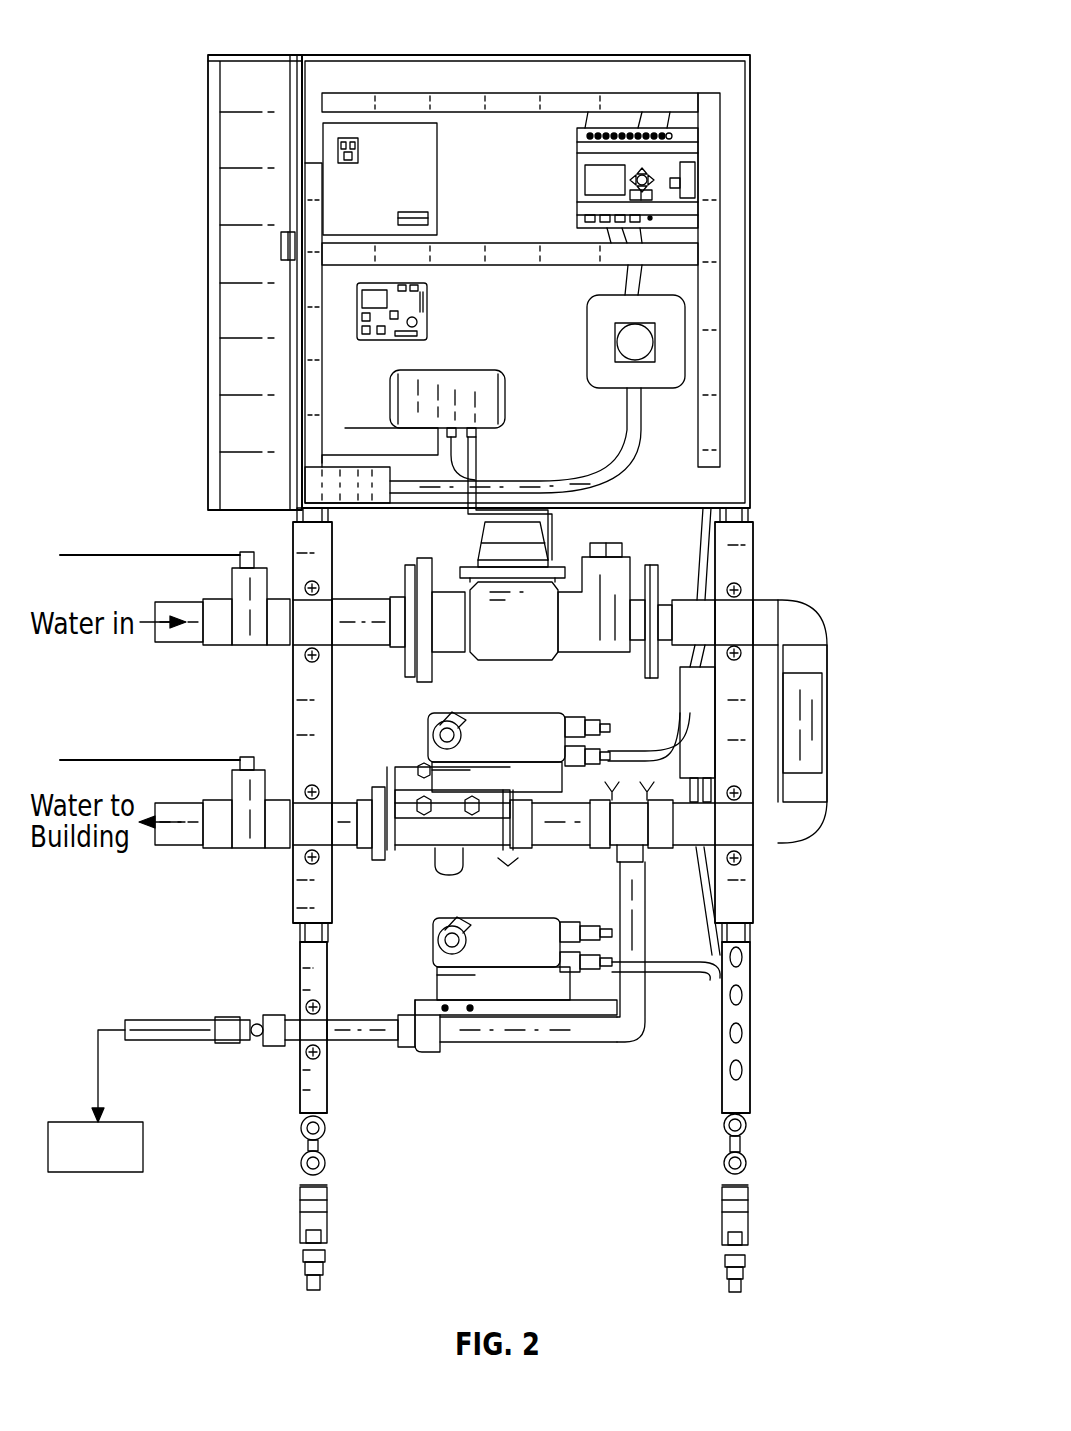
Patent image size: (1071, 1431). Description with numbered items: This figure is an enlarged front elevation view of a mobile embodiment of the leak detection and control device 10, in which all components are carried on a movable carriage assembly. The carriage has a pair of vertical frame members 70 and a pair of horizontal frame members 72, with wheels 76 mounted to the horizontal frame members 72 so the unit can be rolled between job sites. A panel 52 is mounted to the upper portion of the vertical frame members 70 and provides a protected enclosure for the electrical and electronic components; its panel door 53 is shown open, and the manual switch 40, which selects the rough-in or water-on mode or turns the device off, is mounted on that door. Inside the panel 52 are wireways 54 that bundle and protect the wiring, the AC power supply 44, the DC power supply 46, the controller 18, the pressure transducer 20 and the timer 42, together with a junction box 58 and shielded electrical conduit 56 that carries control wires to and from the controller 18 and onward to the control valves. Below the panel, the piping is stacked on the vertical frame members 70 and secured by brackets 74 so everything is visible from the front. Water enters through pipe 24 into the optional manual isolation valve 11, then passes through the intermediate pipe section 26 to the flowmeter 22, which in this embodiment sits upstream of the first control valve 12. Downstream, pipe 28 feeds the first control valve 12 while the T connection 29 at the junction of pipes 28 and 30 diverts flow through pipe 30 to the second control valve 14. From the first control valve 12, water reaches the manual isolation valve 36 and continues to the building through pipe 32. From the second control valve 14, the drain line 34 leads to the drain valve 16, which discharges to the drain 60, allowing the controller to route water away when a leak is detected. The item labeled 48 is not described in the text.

The leak detection and control device 10 is at (800, 35).
The manual isolation valve 11 is at (248, 558).
The first control valve 12 is at (513, 727).
The second control valve 14 is at (523, 938).
The drain valve 16 is at (220, 1016).
The controller 18 is at (668, 133).
The pressure transducer 20 is at (483, 385).
The flowmeter 22 is at (507, 633).
The pipe 24 is at (180, 634).
The intermediate pipe section 26 is at (375, 633).
The pipe 28 is at (807, 723).
The T connection 29 is at (640, 833).
The pipe 30 is at (622, 905).
The pipe 32 is at (343, 806).
The drain line 34 is at (380, 1028).
The manual isolation valve 36 is at (252, 832).
The manual switch 40 is at (280, 242).
The timer 42 is at (660, 330).
The AC power supply 44 is at (408, 167).
The DC power supply 46 is at (380, 342).
The enclosure 48 is at (350, 70).
The panel 52 is at (455, 57).
The panel door 53 is at (252, 70).
The wireway 54 is at (512, 103).
The shielded electrical conduit 56 is at (625, 473).
The junction box 58 is at (362, 505).
The drain 60 is at (94, 1113).
The vertical frame member 70 is at (327, 1142).
The horizontal frame member 72 is at (317, 1222).
The bracket 74 is at (303, 638).
The wheel 76 is at (307, 1287).